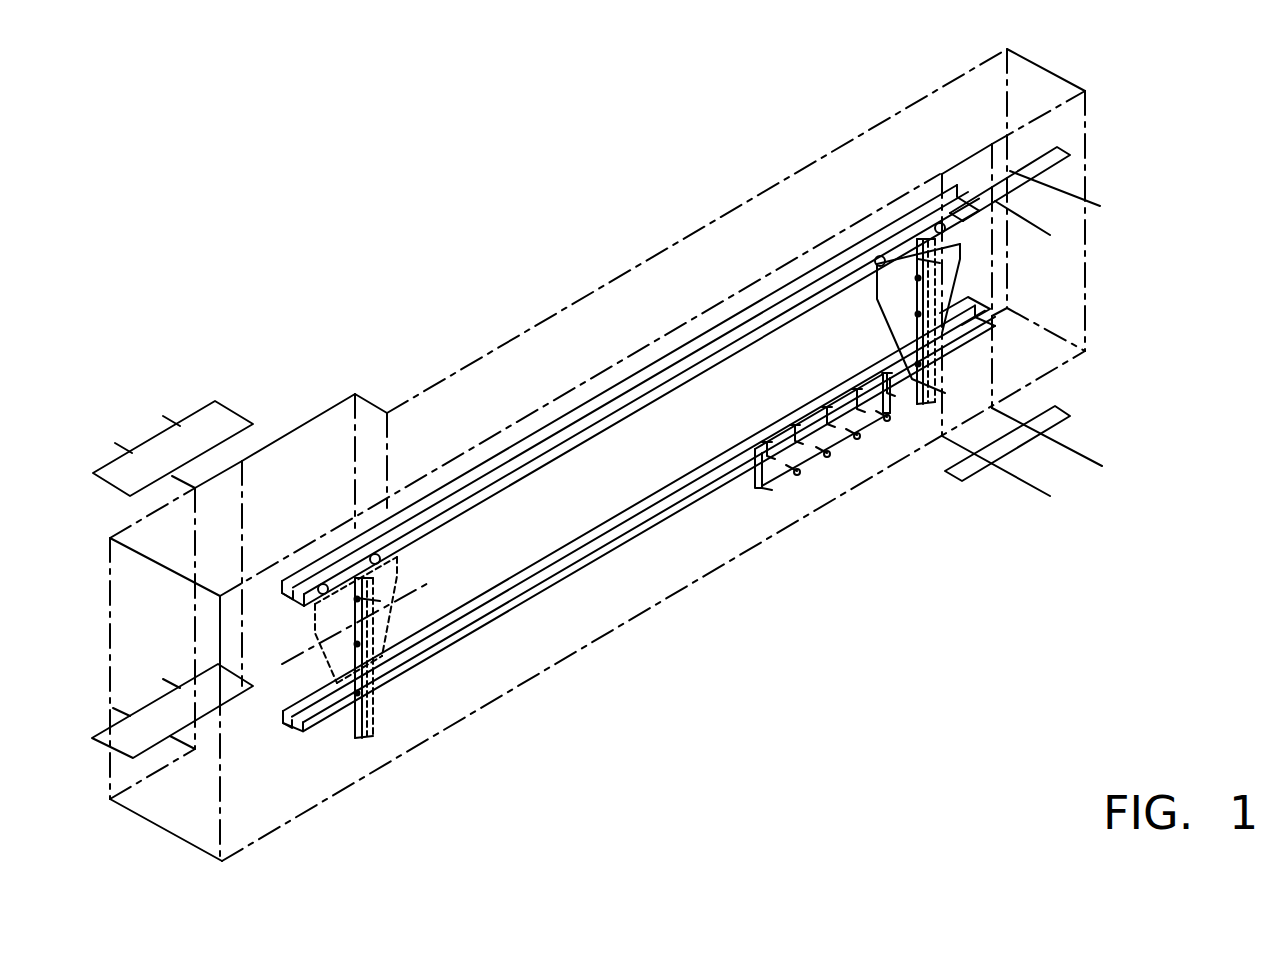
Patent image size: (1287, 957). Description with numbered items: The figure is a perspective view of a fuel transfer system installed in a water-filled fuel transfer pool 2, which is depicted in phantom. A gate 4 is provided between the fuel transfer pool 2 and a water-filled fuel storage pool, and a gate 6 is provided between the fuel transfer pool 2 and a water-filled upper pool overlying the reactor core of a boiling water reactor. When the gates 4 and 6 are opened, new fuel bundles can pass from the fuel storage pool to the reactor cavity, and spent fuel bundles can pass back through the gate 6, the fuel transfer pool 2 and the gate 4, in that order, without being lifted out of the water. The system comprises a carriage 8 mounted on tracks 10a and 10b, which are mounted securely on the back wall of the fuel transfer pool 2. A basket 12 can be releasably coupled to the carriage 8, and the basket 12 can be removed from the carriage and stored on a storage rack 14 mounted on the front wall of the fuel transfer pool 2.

The fuel transfer pool 2 is at (693, 230).
The gate 4 is at (230, 403).
The gate 6 is at (1077, 137).
The carriage 8 is at (878, 322).
The track 10a is at (313, 558).
The track 10b is at (300, 728).
The basket 12 is at (1024, 282).
The storage rack 14 is at (783, 475).